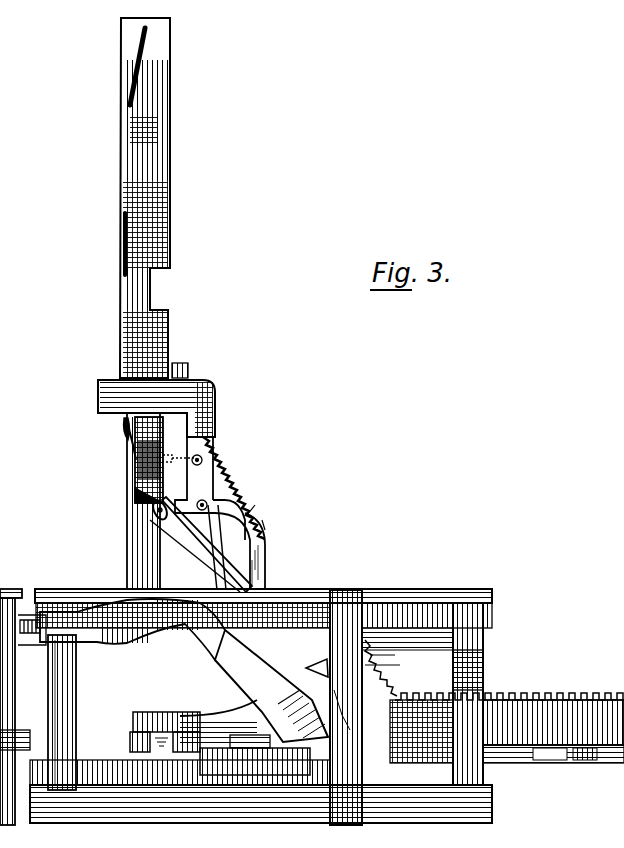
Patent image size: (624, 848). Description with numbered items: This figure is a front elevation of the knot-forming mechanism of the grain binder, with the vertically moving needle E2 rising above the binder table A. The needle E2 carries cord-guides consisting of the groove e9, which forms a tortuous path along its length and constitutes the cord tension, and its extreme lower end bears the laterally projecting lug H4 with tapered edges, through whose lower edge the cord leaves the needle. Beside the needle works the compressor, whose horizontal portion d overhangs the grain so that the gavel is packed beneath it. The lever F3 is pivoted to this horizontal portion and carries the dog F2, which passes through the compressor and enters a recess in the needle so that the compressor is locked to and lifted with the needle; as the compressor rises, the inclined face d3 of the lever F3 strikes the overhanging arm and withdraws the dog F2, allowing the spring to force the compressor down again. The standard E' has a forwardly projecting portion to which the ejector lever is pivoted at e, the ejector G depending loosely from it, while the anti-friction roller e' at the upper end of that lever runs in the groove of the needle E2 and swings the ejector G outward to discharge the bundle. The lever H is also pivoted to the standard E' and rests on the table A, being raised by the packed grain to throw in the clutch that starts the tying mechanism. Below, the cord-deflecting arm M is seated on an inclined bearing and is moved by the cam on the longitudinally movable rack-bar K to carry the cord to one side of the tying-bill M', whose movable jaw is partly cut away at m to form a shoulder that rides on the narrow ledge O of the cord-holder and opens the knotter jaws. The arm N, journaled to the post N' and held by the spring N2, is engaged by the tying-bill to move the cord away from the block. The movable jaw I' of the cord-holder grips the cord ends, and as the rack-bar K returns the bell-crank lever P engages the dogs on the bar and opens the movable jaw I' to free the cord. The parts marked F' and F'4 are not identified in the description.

The needle E2 is at (168, 178).
The groove e9 is at (135, 68).
The lever F3 is at (213, 396).
The standard E' is at (126, 501).
The dog F2 is at (140, 466).
The laterally-projecting lug H4 is at (137, 489).
The anti-friction roller e' is at (109, 426).
The pivot e is at (112, 442).
The bracket arm F' is at (236, 513).
The horizontal portion of the compressor d is at (217, 546).
The inclined face d3 is at (212, 440).
The bracket curve F'4 is at (265, 500).
The lever H is at (212, 548).
The ejector G is at (161, 522).
The table A is at (326, 591).
The arm N is at (132, 629).
The spring N2 is at (30, 642).
The post N' is at (75, 712).
The movable jaw I' is at (152, 733).
The ledge O is at (218, 710).
The bell-crank lever P is at (250, 760).
The cord-deflecting arm M is at (271, 686).
The cut-away portion of movable knotter jaw m is at (315, 673).
The tying-bill M' is at (346, 710).
The rack-bar K is at (594, 700).